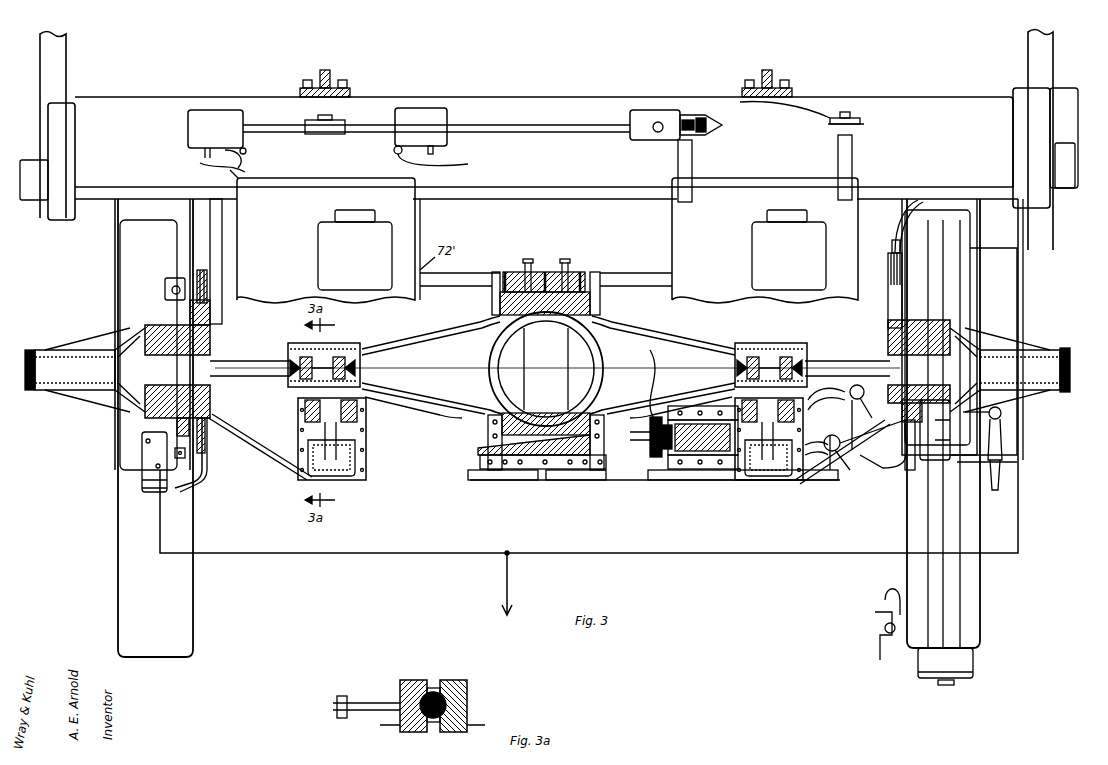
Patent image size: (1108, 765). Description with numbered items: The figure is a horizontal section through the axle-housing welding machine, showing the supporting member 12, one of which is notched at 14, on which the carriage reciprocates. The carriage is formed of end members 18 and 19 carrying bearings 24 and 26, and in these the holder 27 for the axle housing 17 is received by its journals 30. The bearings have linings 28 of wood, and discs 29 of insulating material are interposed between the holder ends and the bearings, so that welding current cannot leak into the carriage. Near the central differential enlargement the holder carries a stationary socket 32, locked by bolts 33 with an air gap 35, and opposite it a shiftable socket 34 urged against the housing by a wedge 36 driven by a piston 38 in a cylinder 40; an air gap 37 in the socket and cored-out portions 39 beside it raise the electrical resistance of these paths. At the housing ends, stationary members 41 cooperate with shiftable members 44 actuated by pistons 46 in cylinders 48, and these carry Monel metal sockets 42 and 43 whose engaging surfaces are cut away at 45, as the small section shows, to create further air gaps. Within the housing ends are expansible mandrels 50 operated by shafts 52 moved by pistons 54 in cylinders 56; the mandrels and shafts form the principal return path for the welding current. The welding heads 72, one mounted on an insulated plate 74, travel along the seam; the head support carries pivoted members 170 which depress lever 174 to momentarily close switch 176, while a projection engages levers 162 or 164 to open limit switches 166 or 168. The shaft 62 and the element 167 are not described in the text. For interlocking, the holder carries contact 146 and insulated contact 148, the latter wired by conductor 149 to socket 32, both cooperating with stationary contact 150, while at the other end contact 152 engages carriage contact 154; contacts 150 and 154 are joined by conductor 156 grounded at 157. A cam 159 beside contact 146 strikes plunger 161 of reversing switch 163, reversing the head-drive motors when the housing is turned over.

In FIG. 3, the supporting member 12 is at (180, 631).
In FIG. 3, the notch 14 is at (950, 571).
In FIG. 3, the axle housing 17 is at (655, 345).
In FIG. 3, the end member 18 is at (120, 287).
In FIG. 3, the end member 19 is at (950, 236).
In FIG. 3, the bearing 24 is at (150, 325).
In FIG. 3, the bearing 26 is at (940, 320).
In FIG. 3, the holder 27 is at (440, 482).
In FIG. 3, the lining 28 is at (185, 422).
In FIG. 3, the disc 29 is at (210, 318).
In FIG. 3, the journal 30 is at (140, 400).
In FIG. 3, the stationary socket 32 is at (515, 272).
In FIG. 3, the bolt 33 is at (540, 262).
In FIG. 3, the shiftable socket 34 is at (500, 425).
In FIG. 3, the air gap 35 is at (560, 292).
In FIG. 3, the wedge 36 is at (548, 455).
In FIG. 3, the air gap 37 is at (535, 425).
In FIG. 3, the piston 38 is at (665, 470).
In FIG. 3, the cored-out portion 39 is at (480, 445).
In FIG. 3, the cylinder 40 is at (730, 465).
In FIG. 3, the stationary member 41 is at (308, 345).
In FIG. 3A, the stationary member 41 is at (467, 690).
In FIG. 3, the socket 42 is at (338, 355).
In FIG. 3A, the socket 42 is at (445, 682).
In FIG. 3, the socket 43 is at (355, 392).
In FIG. 3A, the socket 43 is at (432, 690).
In FIG. 3, the shiftable member 44 is at (300, 410).
In FIG. 3A, the shiftable member 44 is at (398, 682).
In FIG. 3A, the cut-away air gap 45 is at (434, 727).
In FIG. 3, the piston 46 is at (366, 442).
In FIG. 3A, the piston 46 is at (342, 696).
In FIG. 3, the cylinder 48 is at (355, 465).
In FIG. 3, the expansible mandrel 50 is at (372, 343).
In FIG. 3, the reciprocated shaft 52 is at (270, 370).
In FIG. 3, the piston 54 is at (90, 355).
In FIG. 3, the cylinder 56 is at (30, 392).
In FIG. 3, the shaft 62 is at (845, 355).
In FIG. 3, the welding head 72 is at (882, 228).
In FIG. 3, the plate 74 is at (405, 205).
In FIG. 3, the contact 146 is at (210, 470).
In FIG. 3, the contact 148 is at (207, 270).
In FIG. 3, the conductor 149 is at (372, 290).
In FIG. 3, the stationary contact 150 is at (183, 490).
In FIG. 3, the contact 152 is at (905, 268).
In FIG. 3, the contact 154 is at (915, 223).
In FIG. 3, the conductor 156 is at (352, 553).
In FIG. 3, the ground 157 is at (507, 595).
In FIG. 3, the cam 159 is at (165, 470).
In FIG. 3, the plunger 161 is at (170, 277).
In FIG. 3, the lever 162 is at (203, 163).
In FIG. 3, the reversing switch 163 is at (164, 290).
In FIG. 3, the lever 164 is at (443, 159).
In FIG. 3, the switch 166 is at (218, 117).
In FIG. 3, the lever 167 is at (222, 170).
In FIG. 3, the switch 168 is at (432, 118).
In FIG. 3, the pivoted member 170 is at (553, 147).
In FIG. 3, the lever 174 is at (668, 115).
In FIG. 3, the switch 176 is at (656, 133).